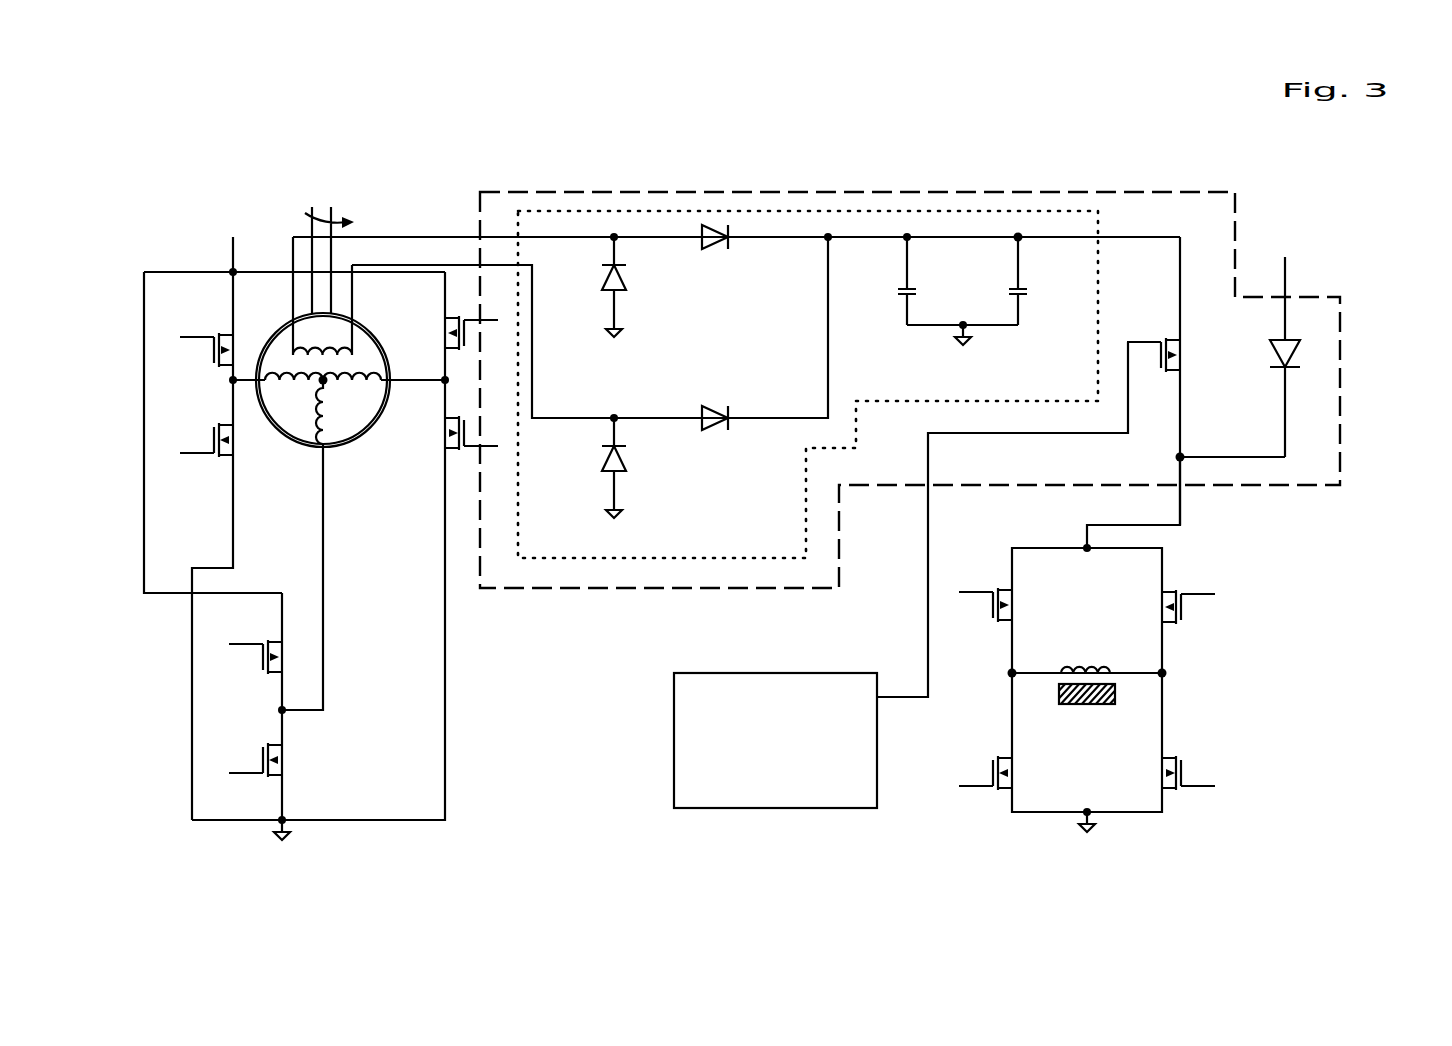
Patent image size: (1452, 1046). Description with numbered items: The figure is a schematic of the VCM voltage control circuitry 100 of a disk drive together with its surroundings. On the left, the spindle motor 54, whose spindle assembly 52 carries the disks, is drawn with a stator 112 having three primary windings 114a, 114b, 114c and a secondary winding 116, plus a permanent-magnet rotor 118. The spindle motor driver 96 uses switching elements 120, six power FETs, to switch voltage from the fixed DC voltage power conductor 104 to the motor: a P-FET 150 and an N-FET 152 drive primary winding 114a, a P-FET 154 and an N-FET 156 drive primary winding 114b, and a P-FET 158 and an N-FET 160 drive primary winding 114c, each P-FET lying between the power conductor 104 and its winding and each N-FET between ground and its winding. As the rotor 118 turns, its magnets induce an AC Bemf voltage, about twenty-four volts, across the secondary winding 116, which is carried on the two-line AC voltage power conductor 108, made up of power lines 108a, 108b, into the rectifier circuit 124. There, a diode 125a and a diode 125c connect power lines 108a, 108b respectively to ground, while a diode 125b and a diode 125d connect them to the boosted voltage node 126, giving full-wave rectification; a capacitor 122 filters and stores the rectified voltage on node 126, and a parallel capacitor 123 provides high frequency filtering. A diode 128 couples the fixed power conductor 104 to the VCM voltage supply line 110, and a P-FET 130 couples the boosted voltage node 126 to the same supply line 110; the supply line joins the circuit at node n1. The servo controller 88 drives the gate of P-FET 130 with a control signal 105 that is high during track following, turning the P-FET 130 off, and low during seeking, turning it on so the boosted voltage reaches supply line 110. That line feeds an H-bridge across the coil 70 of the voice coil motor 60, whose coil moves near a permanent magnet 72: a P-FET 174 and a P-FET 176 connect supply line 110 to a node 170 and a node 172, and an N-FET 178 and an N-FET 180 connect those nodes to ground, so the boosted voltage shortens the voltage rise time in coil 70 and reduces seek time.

The spindle assembly 52 is at (330, 214).
The spindle motor 54 is at (358, 447).
The voice coil motor 60 is at (1058, 632).
The coil 70 is at (1100, 664).
The permanent magnet 72 is at (1087, 710).
The servo controller 88 is at (800, 810).
The spindle motor driver 96 is at (167, 613).
The VCM voltage control circuitry 100 is at (1127, 191).
The fixed DC voltage power conductor 104 is at (232, 262).
The control signal 105 is at (1008, 432).
The AC voltage power conductor 108 is at (472, 265).
The power line 108a is at (385, 237).
The power line 108b is at (396, 266).
The VCM voltage supply line 110 is at (1179, 531).
The stator 112 is at (302, 444).
The primary winding 114a is at (292, 388).
The primary winding 114b is at (353, 389).
The primary winding 114c is at (342, 412).
The secondary winding 116 is at (316, 347).
The rotor 118 is at (284, 436).
The switching elements 120 is at (179, 383).
The capacitor 122 is at (912, 287).
The capacitor 123 is at (1020, 287).
The rectifier circuit 124 is at (550, 207).
The diode 125a is at (628, 287).
The diode 125b is at (717, 249).
The diode 125c is at (626, 457).
The diode 125d is at (708, 410).
The boosted voltage node 126 is at (1018, 237).
The diode 128 is at (1280, 361).
The P-FET 130 is at (1161, 340).
The P-FET 150 is at (209, 360).
The N-FET 152 is at (209, 438).
The P-FET 154 is at (441, 345).
The N-FET 156 is at (461, 447).
The P-FET 158 is at (256, 665).
The N-FET 160 is at (258, 757).
The node 170 is at (1008, 673).
The node 172 is at (1166, 673).
The P-FET 174 is at (982, 589).
The P-FET 176 is at (1190, 624).
The N-FET 178 is at (985, 773).
The N-FET 180 is at (1188, 775).
The node n1 is at (1177, 458).